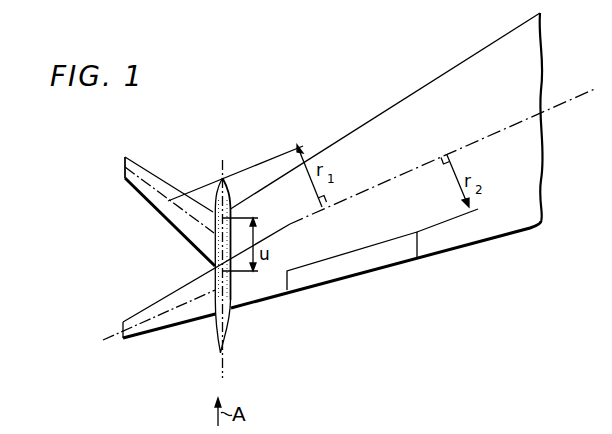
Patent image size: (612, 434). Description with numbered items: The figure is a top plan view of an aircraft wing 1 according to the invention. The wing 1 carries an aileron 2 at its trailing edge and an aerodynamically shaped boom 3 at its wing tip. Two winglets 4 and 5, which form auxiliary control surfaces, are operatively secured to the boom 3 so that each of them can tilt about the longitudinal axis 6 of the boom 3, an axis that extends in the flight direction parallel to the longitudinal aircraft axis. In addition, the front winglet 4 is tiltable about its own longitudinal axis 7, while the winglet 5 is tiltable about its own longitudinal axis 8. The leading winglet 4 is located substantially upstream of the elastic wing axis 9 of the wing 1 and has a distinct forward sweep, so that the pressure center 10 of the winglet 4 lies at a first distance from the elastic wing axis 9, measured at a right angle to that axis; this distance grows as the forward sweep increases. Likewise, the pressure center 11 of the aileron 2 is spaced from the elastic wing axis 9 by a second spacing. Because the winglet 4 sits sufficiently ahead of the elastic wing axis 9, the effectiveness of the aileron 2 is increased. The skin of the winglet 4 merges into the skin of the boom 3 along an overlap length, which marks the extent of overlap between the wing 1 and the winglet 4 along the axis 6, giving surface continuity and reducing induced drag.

The aircraft wing 1 is at (465, 123).
The aileron 2 is at (408, 258).
The aerodynamically shaped boom 3 is at (230, 313).
The winglet 4 is at (137, 186).
The winglet 5 is at (160, 329).
The longitudinal axis of the boom 6 is at (222, 167).
The longitudinal axis of the winglet 7 is at (125, 157).
The longitudinal axis of the winglet 8 is at (113, 333).
The elastic wing axis 9 is at (557, 110).
The pressure center of the winglet 10 is at (177, 200).
The pressure center of the aileron 11 is at (354, 259).